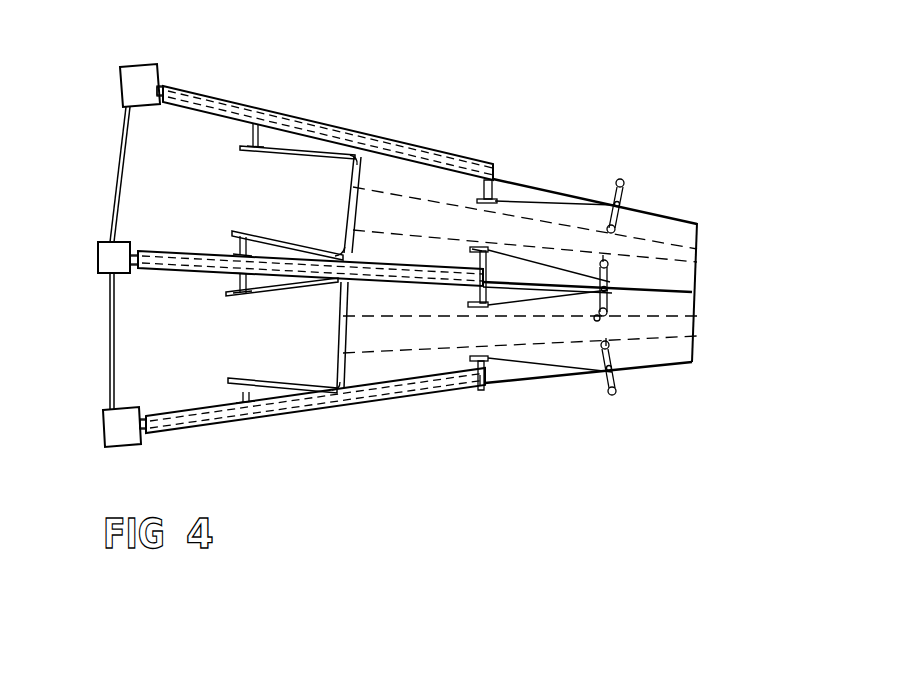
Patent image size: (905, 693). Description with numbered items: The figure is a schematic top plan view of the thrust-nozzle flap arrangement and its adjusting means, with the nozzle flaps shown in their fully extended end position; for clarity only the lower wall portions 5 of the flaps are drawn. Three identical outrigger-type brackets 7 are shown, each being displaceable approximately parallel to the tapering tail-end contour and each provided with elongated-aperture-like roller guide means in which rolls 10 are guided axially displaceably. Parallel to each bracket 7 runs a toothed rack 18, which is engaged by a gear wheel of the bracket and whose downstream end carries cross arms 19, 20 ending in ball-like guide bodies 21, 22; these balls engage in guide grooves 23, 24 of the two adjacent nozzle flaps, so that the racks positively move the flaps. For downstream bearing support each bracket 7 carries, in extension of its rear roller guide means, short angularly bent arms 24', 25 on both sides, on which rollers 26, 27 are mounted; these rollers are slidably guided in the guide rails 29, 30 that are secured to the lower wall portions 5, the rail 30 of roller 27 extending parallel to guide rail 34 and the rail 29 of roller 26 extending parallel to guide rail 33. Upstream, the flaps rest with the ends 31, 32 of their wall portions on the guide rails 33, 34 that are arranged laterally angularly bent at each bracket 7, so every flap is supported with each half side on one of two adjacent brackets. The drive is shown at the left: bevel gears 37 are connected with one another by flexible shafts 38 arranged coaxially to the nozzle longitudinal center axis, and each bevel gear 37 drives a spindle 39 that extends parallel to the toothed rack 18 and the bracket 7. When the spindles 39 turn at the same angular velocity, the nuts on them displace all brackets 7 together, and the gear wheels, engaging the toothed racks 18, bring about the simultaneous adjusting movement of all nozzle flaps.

The lower wall portion 5 is at (348, 183).
The outrigger-type bracket 7 is at (255, 102).
The roll 10 is at (188, 98).
The toothed rack 18 is at (548, 186).
The cross arm 19 is at (622, 194).
The cross arm 20 is at (618, 210).
The ball-like guide body 21 is at (623, 182).
The ball-like guide body 22 is at (616, 226).
The guide groove 23 is at (607, 229).
The guide groove 24 is at (524, 329).
The short arm 24' is at (458, 250).
The short arm 25 is at (492, 190).
The roller 26 is at (470, 246).
The roller 27 is at (500, 197).
The guide rail 29 is at (526, 255).
The guide rail 30 is at (552, 201).
The upstream end 31 is at (347, 162).
The upstream end 32 is at (343, 248).
The guide rail 33 is at (257, 231).
The guide rail 34 is at (273, 153).
The bevel gear 37 is at (120, 82).
The flexible shaft 38 is at (123, 193).
The spindle 39 is at (162, 85).